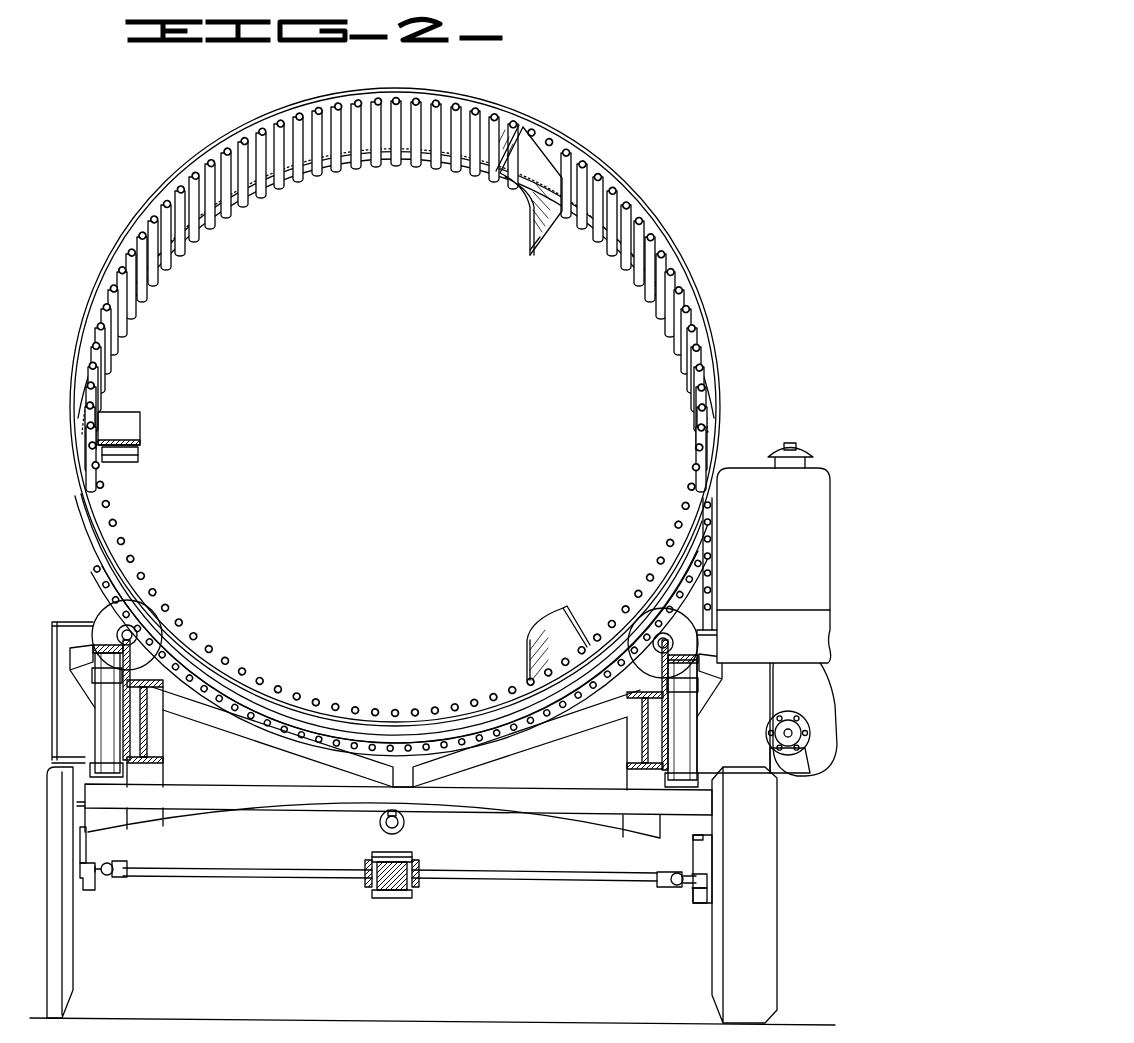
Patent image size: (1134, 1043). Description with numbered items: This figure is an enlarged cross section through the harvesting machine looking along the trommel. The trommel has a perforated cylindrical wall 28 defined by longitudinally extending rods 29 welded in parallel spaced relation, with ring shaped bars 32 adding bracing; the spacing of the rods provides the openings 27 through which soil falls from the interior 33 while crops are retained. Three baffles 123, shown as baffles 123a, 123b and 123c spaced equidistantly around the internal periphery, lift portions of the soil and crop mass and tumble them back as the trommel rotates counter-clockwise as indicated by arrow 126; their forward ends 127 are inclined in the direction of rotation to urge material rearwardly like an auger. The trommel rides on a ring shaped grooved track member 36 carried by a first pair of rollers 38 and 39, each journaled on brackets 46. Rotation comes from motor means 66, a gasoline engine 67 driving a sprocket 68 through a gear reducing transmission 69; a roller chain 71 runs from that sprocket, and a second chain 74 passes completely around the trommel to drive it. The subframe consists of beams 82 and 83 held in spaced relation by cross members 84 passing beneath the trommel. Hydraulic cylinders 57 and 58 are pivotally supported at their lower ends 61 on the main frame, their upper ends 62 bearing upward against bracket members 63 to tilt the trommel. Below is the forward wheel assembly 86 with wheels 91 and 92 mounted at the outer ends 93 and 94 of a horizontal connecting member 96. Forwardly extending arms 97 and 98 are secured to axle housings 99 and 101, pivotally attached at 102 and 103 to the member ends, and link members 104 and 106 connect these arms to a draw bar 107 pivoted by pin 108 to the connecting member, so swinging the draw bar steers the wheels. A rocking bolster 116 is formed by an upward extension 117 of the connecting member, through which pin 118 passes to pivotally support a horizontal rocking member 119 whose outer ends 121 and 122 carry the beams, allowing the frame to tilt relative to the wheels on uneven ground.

The openings 27 is at (386, 102).
The rods 29 is at (448, 101).
The ring shaped bars 32 is at (470, 95).
The perforated cylindrical wall 28 is at (507, 104).
The trommel interior 33 is at (471, 389).
The grooved track member 36 is at (313, 722).
The baffles 123 is at (566, 176).
The baffle 123a is at (540, 237).
The baffle 123b is at (531, 665).
The baffle 123c is at (139, 456).
The forward ends of the baffles 127 is at (520, 173).
The arrow 126 is at (696, 216).
The second chain 74 is at (712, 563).
The motor means 66 is at (797, 437).
The gasoline engine 67 is at (792, 545).
The gear reducing transmission 69 is at (808, 696).
The sprocket 68 is at (798, 742).
The roller chain 71 is at (788, 757).
The roller 39 is at (148, 632).
The roller 38 is at (655, 640).
The upper ends of the cylinders 62 is at (102, 647).
The brackets 46 is at (77, 664).
The hydraulic cylinder 58 is at (100, 735).
The hydraulic cylinder 57 is at (684, 736).
The bracket members 63 is at (148, 736).
The beam 83 is at (150, 760).
The cross members 84 is at (283, 742).
The beam 82 is at (640, 750).
The horizontal rocking member 119 is at (522, 793).
The lower ends of the cylinders 61 is at (683, 780).
The upward extension 117 is at (321, 816).
The outer end of the rocking member 122 is at (125, 806).
The outer end of the rocking member 121 is at (718, 813).
The pin 118 is at (405, 822).
The outer end of the connecting member 94 is at (90, 843).
The pivotal attachment 103 is at (99, 861).
The axle housing 101 is at (100, 887).
The forwardly extending arm 98 is at (88, 893).
The link member 106 is at (237, 875).
The connecting member 96 is at (307, 860).
The link member 104 is at (518, 880).
The rocking bolster 116 is at (366, 840).
The pin 108 is at (393, 860).
The draw bar 107 is at (392, 886).
The pivotal attachment 102 is at (688, 868).
The outer end of the connecting member 93 is at (704, 855).
The forwardly extending arm 97 is at (705, 881).
The axle housing 99 is at (703, 902).
The wheel 92 is at (67, 948).
The wheel 91 is at (737, 962).
The forward wheel assembly 86 is at (280, 943).